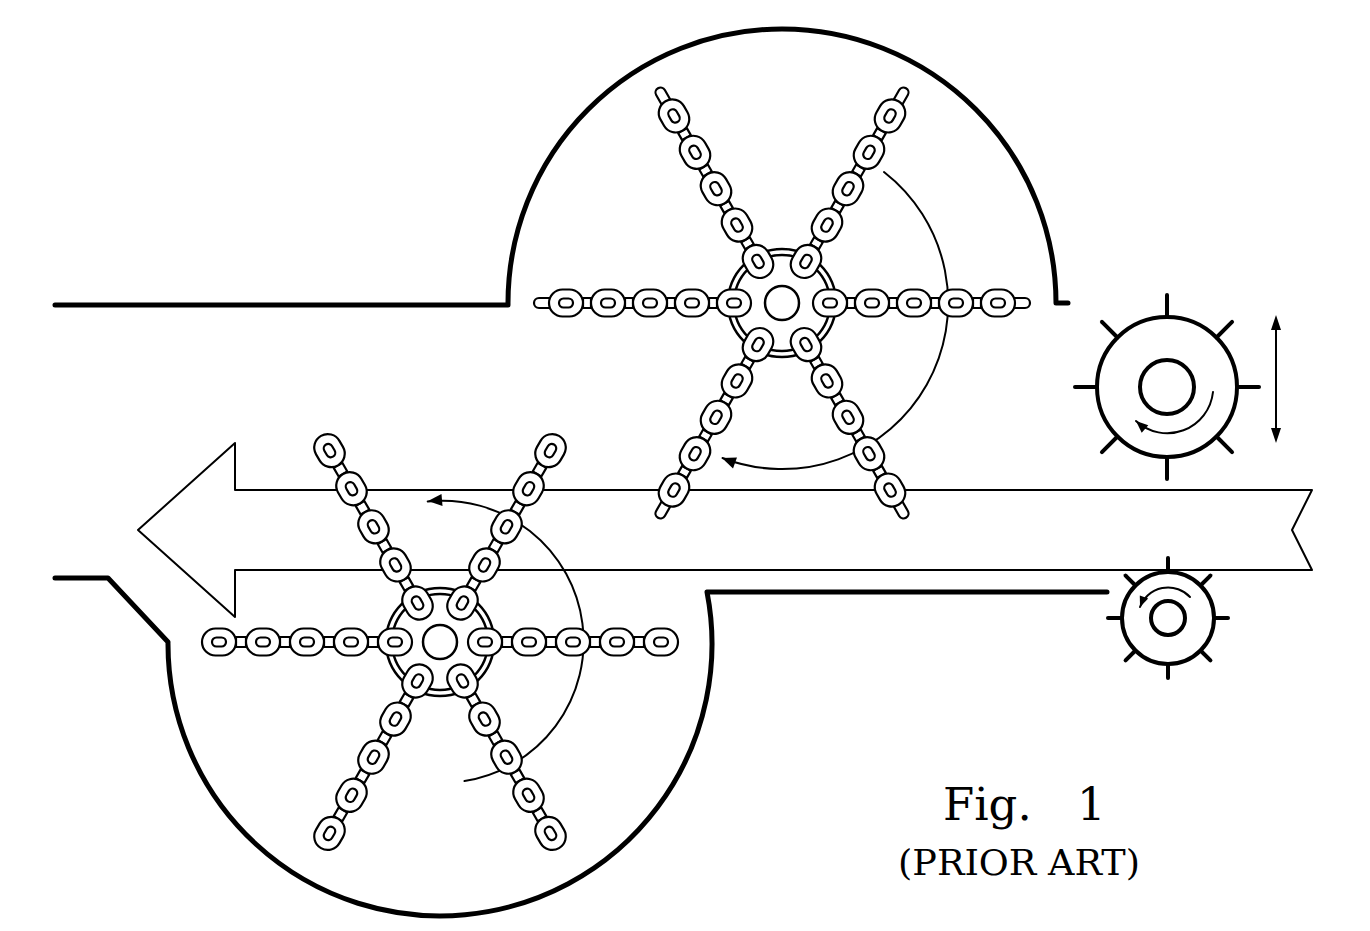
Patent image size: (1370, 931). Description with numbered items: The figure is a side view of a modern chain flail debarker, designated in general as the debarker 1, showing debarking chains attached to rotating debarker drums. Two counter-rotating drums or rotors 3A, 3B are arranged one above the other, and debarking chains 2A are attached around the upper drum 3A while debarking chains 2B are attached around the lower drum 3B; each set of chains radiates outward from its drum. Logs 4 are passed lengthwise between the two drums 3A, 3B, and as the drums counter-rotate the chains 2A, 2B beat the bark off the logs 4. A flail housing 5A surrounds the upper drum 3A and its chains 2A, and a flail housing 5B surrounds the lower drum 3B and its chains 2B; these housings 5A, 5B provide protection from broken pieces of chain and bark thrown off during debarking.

The chain flail debarker 1 is at (683, 472).
The chains 2A is at (903, 122).
The chains 2B is at (610, 657).
The drum or rotor 3A is at (783, 249).
The drum or rotor 3B is at (489, 617).
The logs 4 is at (1040, 489).
The flail housing 5A is at (972, 108).
The flail housing 5B is at (716, 705).